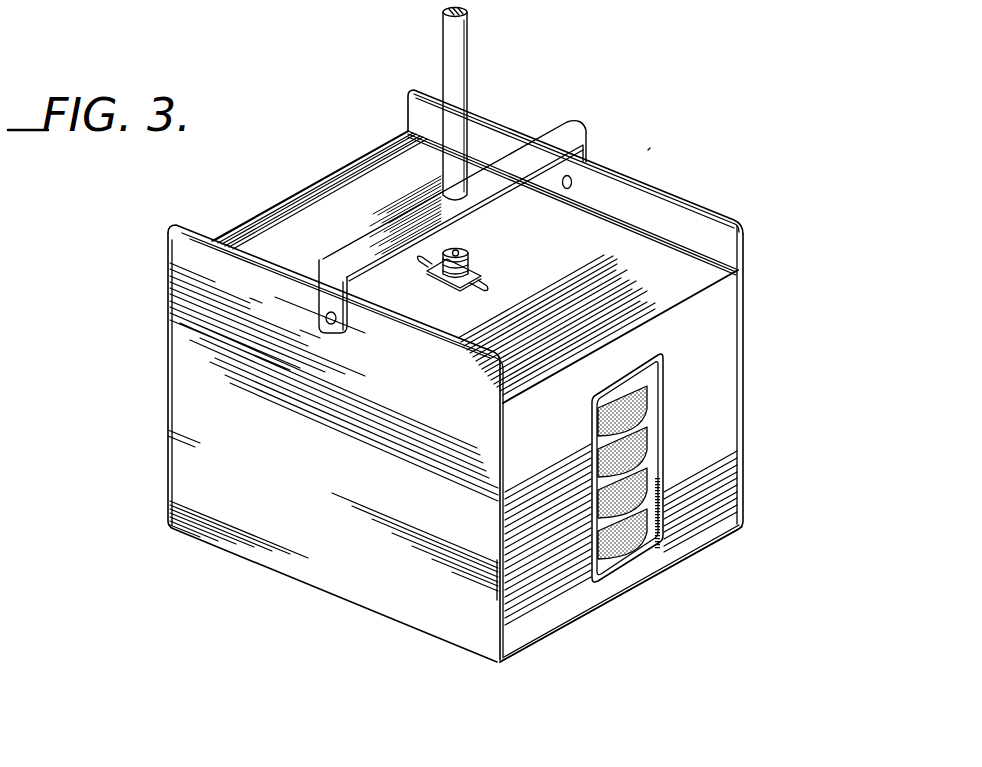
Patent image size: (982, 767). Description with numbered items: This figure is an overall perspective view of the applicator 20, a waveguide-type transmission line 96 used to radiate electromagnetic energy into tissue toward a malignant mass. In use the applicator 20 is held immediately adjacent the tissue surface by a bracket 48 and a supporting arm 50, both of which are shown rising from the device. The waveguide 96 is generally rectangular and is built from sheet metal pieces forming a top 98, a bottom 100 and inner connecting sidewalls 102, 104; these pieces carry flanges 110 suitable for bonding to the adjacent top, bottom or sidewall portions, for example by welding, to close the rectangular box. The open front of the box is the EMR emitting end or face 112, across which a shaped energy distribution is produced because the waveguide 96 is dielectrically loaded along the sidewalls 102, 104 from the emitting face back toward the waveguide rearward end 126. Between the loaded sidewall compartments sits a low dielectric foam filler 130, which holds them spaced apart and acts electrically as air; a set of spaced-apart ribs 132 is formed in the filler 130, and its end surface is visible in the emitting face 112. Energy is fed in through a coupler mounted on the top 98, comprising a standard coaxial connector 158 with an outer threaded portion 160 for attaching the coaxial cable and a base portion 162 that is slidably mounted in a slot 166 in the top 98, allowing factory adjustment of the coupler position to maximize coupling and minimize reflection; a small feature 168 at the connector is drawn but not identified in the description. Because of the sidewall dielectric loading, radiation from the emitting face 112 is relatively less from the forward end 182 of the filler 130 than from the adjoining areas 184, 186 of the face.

The applicator 20 is at (648, 151).
The bracket 48 is at (568, 128).
The supporting arm 50 is at (470, 56).
The waveguide-type transmission line 96 is at (490, 453).
The top 98 is at (657, 293).
The bottom 100 is at (538, 648).
The sidewall 102 is at (333, 577).
The sidewall 104 is at (656, 444).
The flanges 110 is at (684, 213).
The EMR emitting end 112 is at (697, 509).
The waveguide rearward end 126 is at (284, 202).
The low dielectric filler 130 is at (659, 502).
The ribs 132 is at (659, 502).
The coaxial connector 158 is at (486, 245).
The outer threaded portion 160 is at (471, 256).
The base portion 162 is at (431, 278).
The slot 166 is at (487, 285).
The terminal bore 168 is at (456, 249).
The forward end of the filler 182 is at (610, 563).
The adjoining area 184 is at (512, 576).
The adjoining area 186 is at (722, 499).